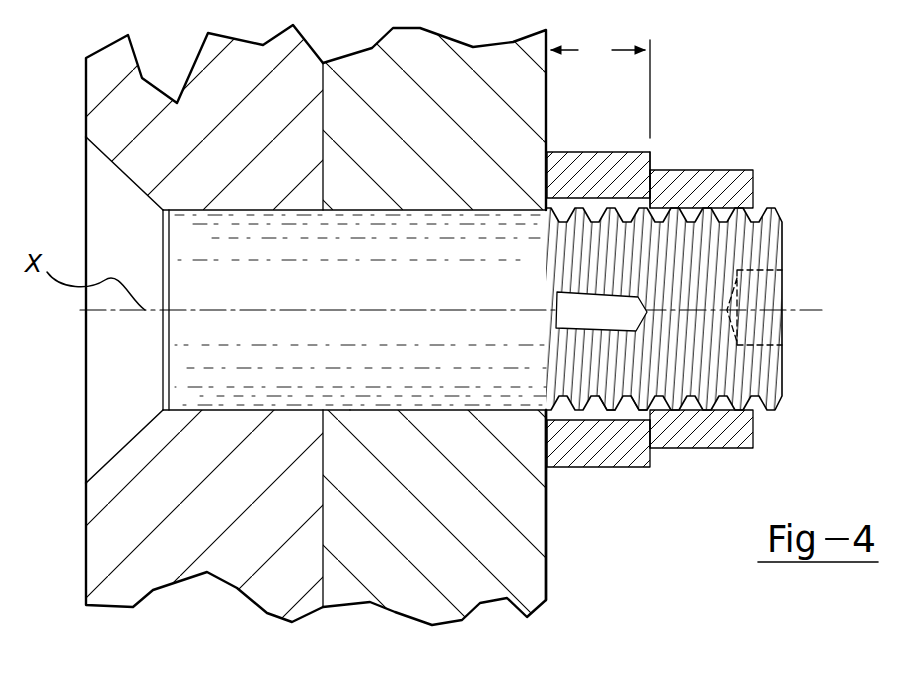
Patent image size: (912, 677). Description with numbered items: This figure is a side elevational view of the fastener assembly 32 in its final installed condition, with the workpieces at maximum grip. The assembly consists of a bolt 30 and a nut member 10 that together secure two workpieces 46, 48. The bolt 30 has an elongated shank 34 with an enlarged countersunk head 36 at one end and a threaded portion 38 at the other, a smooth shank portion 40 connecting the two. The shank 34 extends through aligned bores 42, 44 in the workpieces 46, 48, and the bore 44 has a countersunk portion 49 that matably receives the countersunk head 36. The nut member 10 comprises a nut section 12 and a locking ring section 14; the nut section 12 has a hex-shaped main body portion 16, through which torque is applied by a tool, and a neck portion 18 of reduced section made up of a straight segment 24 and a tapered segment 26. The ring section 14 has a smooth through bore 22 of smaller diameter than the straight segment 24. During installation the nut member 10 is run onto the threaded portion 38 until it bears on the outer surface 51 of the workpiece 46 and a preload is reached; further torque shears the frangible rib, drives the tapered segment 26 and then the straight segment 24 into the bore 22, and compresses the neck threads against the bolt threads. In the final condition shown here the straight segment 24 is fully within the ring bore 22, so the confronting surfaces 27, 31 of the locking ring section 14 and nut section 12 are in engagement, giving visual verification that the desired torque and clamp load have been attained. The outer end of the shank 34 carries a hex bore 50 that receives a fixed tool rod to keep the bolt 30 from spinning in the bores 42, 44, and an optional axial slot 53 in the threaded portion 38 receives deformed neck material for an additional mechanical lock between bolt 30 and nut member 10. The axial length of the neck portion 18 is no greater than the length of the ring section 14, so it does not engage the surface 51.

The nut member 10 is at (766, 81).
The nut section 12 is at (740, 433).
The locking ring section 14 is at (580, 457).
The main body portion 16 is at (723, 170).
The neck portion 18 is at (652, 168).
The through bore 22 is at (557, 210).
The straight segment 24 is at (637, 420).
The tapered segment 26 is at (613, 418).
The confronting surface 27 is at (653, 437).
The bolt 30 is at (247, 216).
The confronting surface 31 is at (653, 168).
The fastener assembly 32 is at (592, 140).
The shank 34 is at (278, 232).
The countersunk head 36 is at (105, 362).
The threaded portion 38 is at (763, 240).
The smooth shank portion 40 is at (459, 295).
The bore 42 is at (516, 410).
The bore 44 is at (291, 410).
The workpiece 46 is at (468, 578).
The workpiece 48 is at (230, 550).
The countersunk portion 49 is at (117, 453).
The hex shaped bore 50 is at (772, 323).
The outer surface 51 is at (547, 566).
The axial slot 53 is at (578, 328).